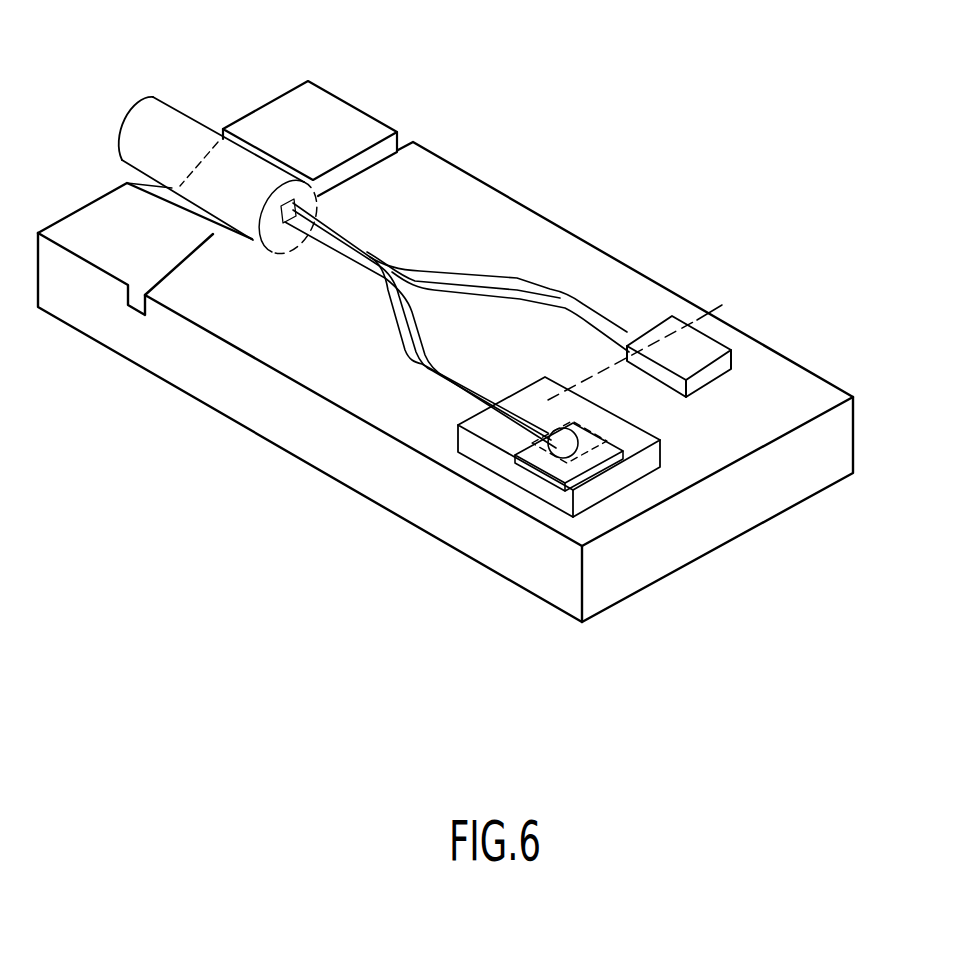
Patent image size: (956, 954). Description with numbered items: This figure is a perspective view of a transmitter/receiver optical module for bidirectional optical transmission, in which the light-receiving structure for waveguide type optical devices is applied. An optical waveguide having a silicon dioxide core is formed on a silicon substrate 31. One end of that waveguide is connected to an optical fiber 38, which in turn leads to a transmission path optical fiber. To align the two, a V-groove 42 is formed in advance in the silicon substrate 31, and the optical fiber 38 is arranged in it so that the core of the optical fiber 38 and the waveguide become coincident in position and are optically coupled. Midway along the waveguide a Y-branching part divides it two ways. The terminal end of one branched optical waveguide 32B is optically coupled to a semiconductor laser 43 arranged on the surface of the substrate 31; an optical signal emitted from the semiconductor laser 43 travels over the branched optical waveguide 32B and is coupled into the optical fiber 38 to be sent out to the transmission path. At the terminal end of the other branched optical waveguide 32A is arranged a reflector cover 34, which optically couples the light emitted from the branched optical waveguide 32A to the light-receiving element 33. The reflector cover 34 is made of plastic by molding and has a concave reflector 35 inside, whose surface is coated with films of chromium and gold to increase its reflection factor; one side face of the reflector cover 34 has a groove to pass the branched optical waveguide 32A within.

The silicon substrate 31 is at (430, 490).
The branched optical waveguide 32A is at (437, 370).
The branched optical waveguide 32B is at (513, 277).
The light-receiving element 33 is at (517, 487).
The reflector cover 34 is at (620, 487).
The concave reflector 35 is at (603, 427).
The optical fiber 38 is at (180, 125).
The V-groove 42 is at (272, 160).
The semiconductor laser 43 is at (698, 340).